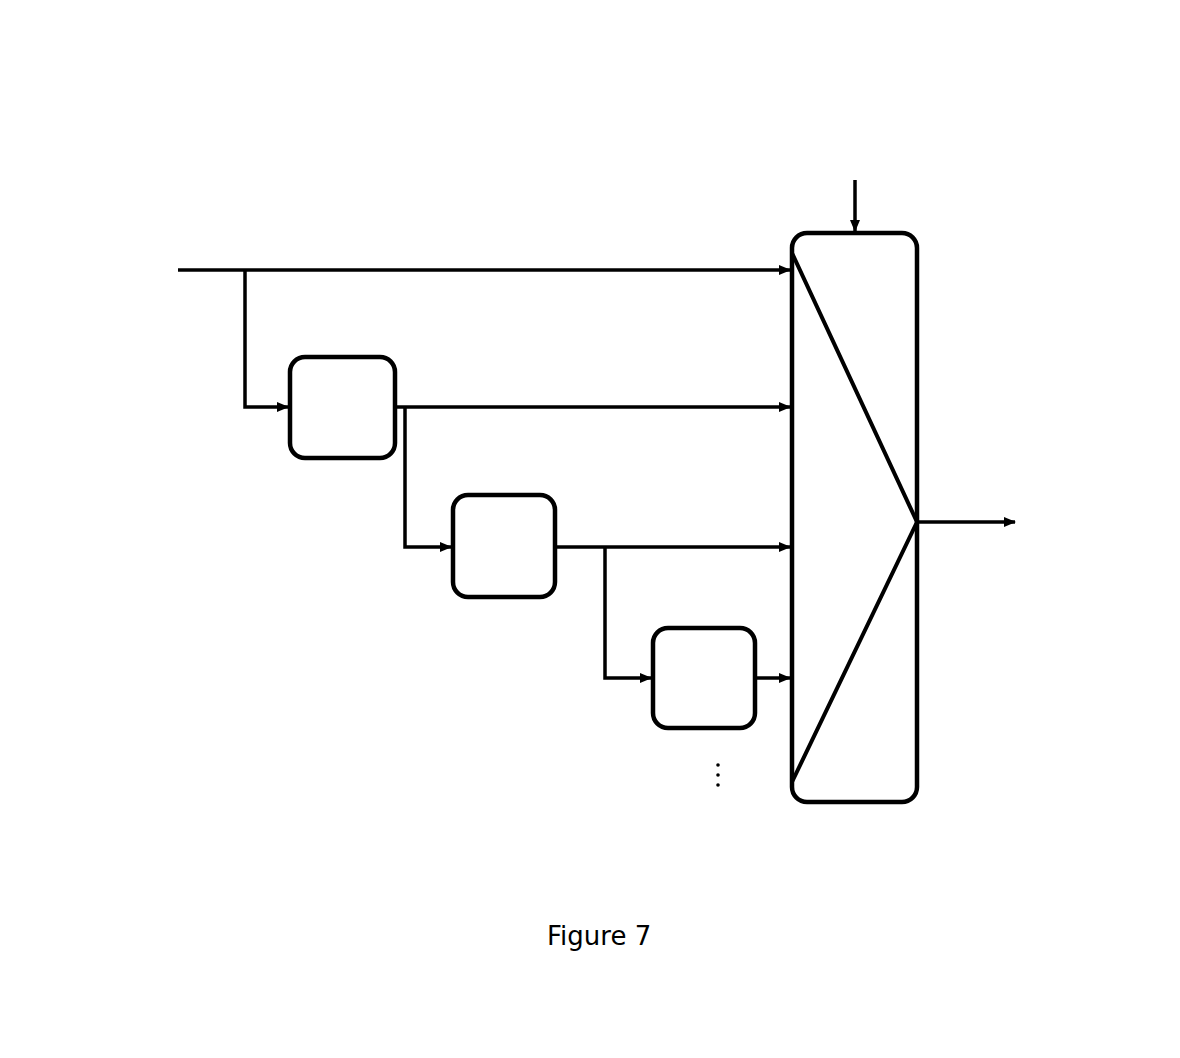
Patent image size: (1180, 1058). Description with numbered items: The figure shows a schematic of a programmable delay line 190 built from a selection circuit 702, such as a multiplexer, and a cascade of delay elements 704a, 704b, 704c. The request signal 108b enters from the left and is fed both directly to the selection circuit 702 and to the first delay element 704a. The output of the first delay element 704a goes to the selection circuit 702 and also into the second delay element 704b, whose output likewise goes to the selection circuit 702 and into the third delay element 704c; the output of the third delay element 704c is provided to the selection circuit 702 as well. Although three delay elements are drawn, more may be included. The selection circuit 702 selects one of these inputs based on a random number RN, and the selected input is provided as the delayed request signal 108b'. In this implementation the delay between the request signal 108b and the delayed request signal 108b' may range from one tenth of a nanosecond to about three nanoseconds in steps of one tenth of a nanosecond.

The programmable delay line 190 is at (1094, 150).
The request signal 108b is at (475, 315).
The first delay element 704a is at (322, 445).
The second delay element 704b is at (495, 583).
The third delay element 704c is at (670, 720).
The selection circuit 702 is at (858, 790).
The delayed request signal 108b' is at (977, 499).